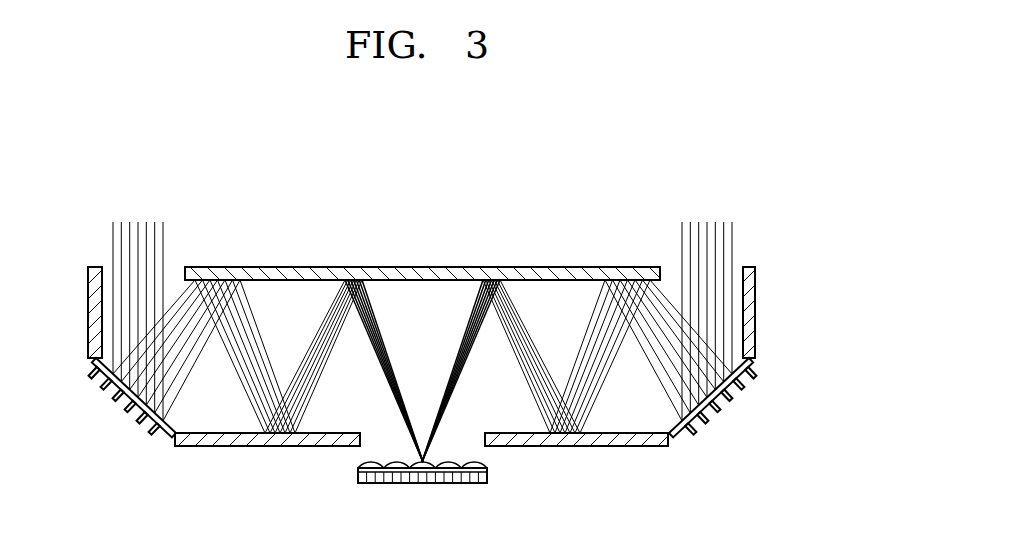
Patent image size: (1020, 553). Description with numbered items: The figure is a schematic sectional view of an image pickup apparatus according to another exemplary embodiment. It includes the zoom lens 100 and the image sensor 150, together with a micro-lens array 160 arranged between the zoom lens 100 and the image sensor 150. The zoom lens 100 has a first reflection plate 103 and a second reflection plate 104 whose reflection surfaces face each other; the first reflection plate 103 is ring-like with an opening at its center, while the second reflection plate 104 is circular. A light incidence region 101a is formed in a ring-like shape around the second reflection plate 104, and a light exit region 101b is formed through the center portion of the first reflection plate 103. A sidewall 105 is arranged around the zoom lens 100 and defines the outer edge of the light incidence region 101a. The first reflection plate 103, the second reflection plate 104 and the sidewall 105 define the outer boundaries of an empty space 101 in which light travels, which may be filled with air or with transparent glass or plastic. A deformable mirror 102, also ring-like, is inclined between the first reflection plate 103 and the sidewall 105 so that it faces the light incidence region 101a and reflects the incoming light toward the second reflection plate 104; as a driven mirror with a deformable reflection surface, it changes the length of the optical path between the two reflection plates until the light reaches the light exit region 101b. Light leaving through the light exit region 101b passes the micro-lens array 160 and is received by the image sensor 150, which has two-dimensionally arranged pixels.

The zoom lens 100 is at (779, 180).
The empty space 101 is at (440, 344).
The light incidence region 101a is at (677, 264).
The light exit region 101b is at (385, 436).
The deformable mirror 102 is at (717, 415).
The first reflection plate 103 is at (573, 446).
The second reflection plate 104 is at (427, 279).
The sidewall 105 is at (755, 307).
The image sensor 150 is at (423, 484).
The micro-lens array 160 is at (356, 463).